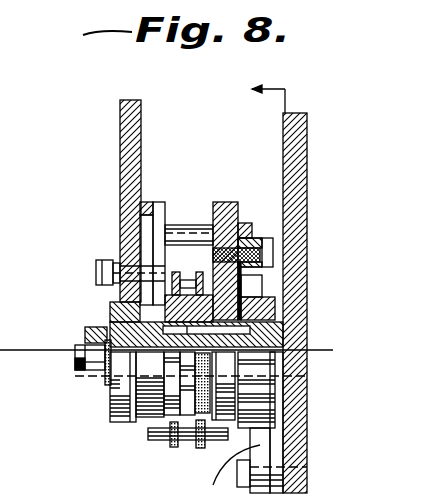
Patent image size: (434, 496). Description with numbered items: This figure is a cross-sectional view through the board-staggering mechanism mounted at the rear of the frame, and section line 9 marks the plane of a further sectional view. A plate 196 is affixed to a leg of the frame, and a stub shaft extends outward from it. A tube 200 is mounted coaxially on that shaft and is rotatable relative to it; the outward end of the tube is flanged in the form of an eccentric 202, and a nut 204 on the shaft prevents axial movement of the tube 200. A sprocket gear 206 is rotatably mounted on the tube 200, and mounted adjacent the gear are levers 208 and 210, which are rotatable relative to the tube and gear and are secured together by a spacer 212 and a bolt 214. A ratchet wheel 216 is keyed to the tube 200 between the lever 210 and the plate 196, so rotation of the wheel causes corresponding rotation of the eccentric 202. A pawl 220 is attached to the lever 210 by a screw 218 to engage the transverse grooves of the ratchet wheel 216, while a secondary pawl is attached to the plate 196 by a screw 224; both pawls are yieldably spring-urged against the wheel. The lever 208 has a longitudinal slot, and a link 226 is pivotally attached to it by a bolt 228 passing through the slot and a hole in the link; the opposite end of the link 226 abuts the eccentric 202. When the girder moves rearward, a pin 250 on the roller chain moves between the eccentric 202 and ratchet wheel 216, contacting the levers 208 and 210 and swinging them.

The section line 9— 9 is at (277, 98).
The plate 196 is at (285, 129).
The tube 200 is at (283, 322).
The eccentric 202 is at (113, 403).
The nut 204 is at (93, 372).
The sprocket gear 206 is at (141, 422).
The lever 208 is at (150, 208).
The lever 210 is at (222, 204).
The spacer 212 is at (187, 230).
The bolt 214 is at (245, 226).
The ratchet wheel 216 is at (280, 399).
The screw 218 is at (262, 244).
The pawl 220 is at (255, 283).
The screw (longitudinal slot) 224 is at (150, 237).
The link 226 is at (120, 132).
The bolt 228 is at (96, 275).
The pin 250 is at (163, 441).